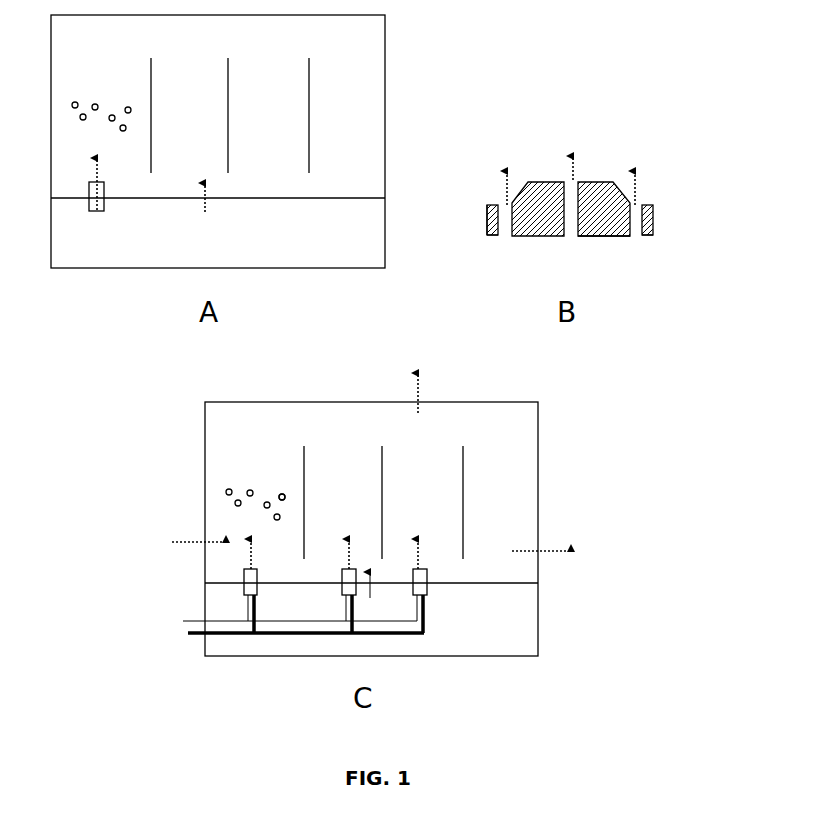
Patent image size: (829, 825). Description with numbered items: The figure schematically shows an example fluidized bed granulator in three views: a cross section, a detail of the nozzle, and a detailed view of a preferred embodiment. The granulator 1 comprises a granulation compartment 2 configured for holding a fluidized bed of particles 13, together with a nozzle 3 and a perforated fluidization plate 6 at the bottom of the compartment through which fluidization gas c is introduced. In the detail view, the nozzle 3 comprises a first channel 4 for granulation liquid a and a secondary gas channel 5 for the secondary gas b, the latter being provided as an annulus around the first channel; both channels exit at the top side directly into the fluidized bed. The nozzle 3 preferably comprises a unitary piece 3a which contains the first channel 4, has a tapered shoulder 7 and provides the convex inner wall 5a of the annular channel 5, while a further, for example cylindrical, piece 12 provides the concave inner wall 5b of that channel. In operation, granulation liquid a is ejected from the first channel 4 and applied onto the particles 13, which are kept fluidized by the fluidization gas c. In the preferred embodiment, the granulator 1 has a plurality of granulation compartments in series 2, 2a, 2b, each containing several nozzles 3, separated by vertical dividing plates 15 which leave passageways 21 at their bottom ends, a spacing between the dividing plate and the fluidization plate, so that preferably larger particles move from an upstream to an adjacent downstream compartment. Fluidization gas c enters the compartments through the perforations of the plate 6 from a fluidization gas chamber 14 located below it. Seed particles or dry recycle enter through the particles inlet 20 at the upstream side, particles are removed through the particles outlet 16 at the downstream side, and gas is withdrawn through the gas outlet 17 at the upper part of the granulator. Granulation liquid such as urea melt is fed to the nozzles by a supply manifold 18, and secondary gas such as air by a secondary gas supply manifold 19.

In FIG. 1A, the granulator 1 is at (387, 93).
In FIG. 1C, the granulator 1 is at (539, 476).
In FIG. 1A, the granulation compartment 2 is at (98, 93).
In FIG. 1C, the granulation compartment 2 is at (248, 478).
In FIG. 1C, the granulation compartment 2a is at (330, 482).
In FIG. 1C, the granulation compartment 2b is at (396, 478).
In FIG. 1A, the nozzle 3 is at (104, 188).
In FIG. 1B, the nozzle 3 is at (594, 120).
In FIG. 1C, the nozzle 3 is at (258, 578).
In FIG. 1B, the unitary piece 3a is at (600, 245).
In FIG. 1B, the first channel 4 is at (560, 180).
In FIG. 1B, the secondary gas channel 5 is at (500, 205).
In FIG. 1B, the convex inner wall 5a is at (623, 240).
In FIG. 1B, the concave inner wall 5b is at (499, 240).
In FIG. 1A, the perforated fluidization plate 6 is at (158, 198).
In FIG. 1C, the perforated fluidization plate 6 is at (312, 578).
In FIG. 1B, the tapered shoulder 7 is at (614, 181).
In FIG. 1B, the further piece 12 is at (487, 232).
In FIG. 1C, the particles 13 is at (270, 492).
In FIG. 1C, the fluidization gas chamber 14 is at (478, 658).
In FIG. 1C, the vertical dividing plate 15 is at (306, 522).
In FIG. 1C, the particles outlet 16 is at (547, 540).
In FIG. 1C, the gas outlet 17 is at (424, 387).
In FIG. 1C, the supply manifold 18 is at (290, 623).
In FIG. 1C, the secondary gas supply manifold 19 is at (287, 611).
In FIG. 1C, the particles inlet 20 is at (178, 536).
In FIG. 1C, the passageway 21 is at (395, 562).
In FIG. 1A, the granulation liquid a is at (93, 152).
In FIG. 1B, the granulation liquid a is at (566, 146).
In FIG. 1C, the granulation liquid a is at (246, 541).
In FIG. 1B, the secondary gas b is at (502, 162).
In FIG. 1A, the fluidization gas c is at (205, 170).
In FIG. 1C, the fluidization gas c is at (368, 560).